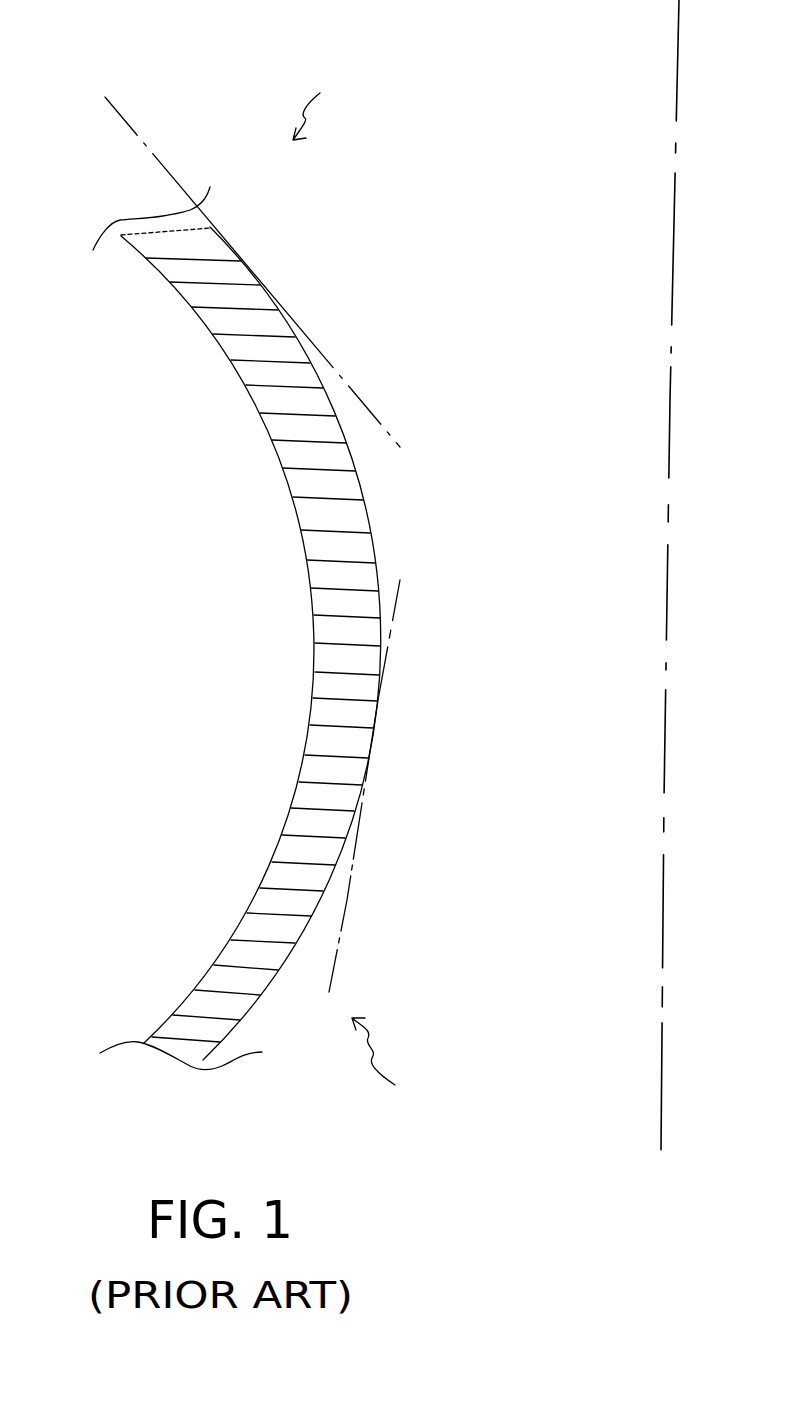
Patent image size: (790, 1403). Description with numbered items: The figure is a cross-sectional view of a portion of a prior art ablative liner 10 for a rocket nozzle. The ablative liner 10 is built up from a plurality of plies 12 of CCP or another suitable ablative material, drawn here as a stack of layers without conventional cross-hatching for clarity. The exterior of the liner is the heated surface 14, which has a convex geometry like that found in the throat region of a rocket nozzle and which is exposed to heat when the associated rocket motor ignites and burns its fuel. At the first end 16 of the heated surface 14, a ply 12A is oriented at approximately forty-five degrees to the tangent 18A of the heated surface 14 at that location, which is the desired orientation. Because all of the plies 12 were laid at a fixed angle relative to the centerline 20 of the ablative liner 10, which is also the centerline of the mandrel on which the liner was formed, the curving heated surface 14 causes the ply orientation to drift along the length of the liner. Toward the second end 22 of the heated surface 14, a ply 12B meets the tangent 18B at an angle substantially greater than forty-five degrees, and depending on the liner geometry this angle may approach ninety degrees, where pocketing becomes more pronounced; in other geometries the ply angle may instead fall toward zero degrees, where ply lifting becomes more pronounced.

The ablative liner 10 is at (152, 566).
The plies 12 is at (360, 662).
The ply 12A is at (203, 250).
The ply 12B is at (347, 743).
The heated surface 14 is at (367, 513).
The first end 16 is at (323, 100).
The tangent 18A is at (303, 330).
The tangent 18B is at (358, 837).
The centerline 20 is at (662, 902).
The second end 22 is at (391, 1067).